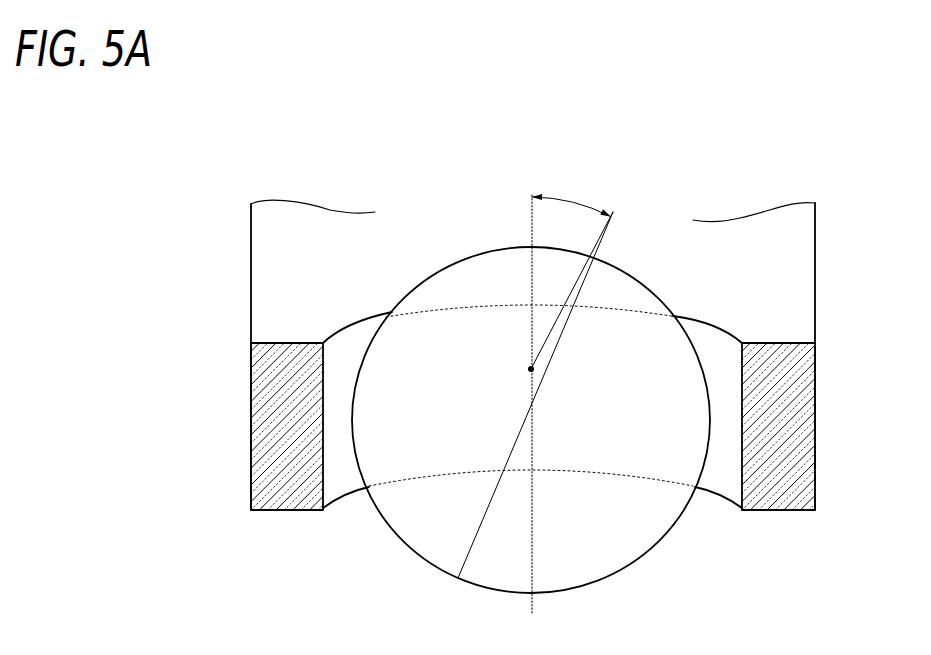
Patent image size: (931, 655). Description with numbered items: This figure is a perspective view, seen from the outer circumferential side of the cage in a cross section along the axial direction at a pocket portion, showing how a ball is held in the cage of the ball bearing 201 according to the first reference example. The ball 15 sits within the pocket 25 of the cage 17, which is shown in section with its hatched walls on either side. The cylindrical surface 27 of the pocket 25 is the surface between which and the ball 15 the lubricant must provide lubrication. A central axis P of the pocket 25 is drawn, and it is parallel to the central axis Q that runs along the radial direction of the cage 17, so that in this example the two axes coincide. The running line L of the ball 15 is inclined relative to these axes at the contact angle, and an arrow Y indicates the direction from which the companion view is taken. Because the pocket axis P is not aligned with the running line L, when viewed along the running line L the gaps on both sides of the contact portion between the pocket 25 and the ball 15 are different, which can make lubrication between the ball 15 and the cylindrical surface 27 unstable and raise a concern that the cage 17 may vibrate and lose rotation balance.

The ball bearing 201 is at (322, 189).
The cage 17 is at (251, 281).
The pocket 25 is at (723, 353).
The cylindrical surface 27 is at (336, 478).
The ball 15 is at (663, 537).
The arrow Y is at (628, 188).
The running line L is at (471, 552).
The central axis of the pocket P is at (532, 572).
The central axis along the radial direction Q is at (533, 548).